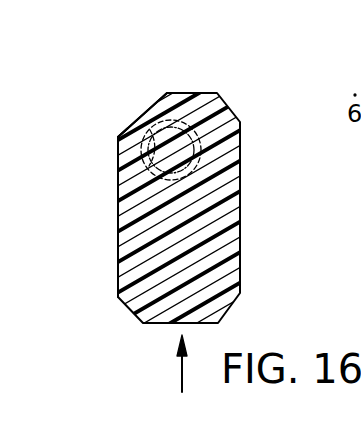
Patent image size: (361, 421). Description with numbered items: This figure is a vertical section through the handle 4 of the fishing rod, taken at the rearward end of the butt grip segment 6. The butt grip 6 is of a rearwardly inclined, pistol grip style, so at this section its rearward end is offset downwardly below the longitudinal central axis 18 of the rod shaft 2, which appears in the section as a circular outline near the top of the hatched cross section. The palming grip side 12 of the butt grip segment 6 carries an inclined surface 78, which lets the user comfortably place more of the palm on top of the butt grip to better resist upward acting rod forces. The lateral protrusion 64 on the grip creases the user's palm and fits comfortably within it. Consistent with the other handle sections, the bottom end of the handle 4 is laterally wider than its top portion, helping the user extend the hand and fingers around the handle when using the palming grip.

The inclined surface 78 is at (147, 115).
The lateral protrusion 64 is at (118, 137).
The rod shaft 2 is at (136, 171).
The longitudinal central axis 18 is at (240, 165).
The palming grip side 12 is at (118, 218).
The handle 4 is at (104, 287).
The butt grip 6 is at (258, 250).